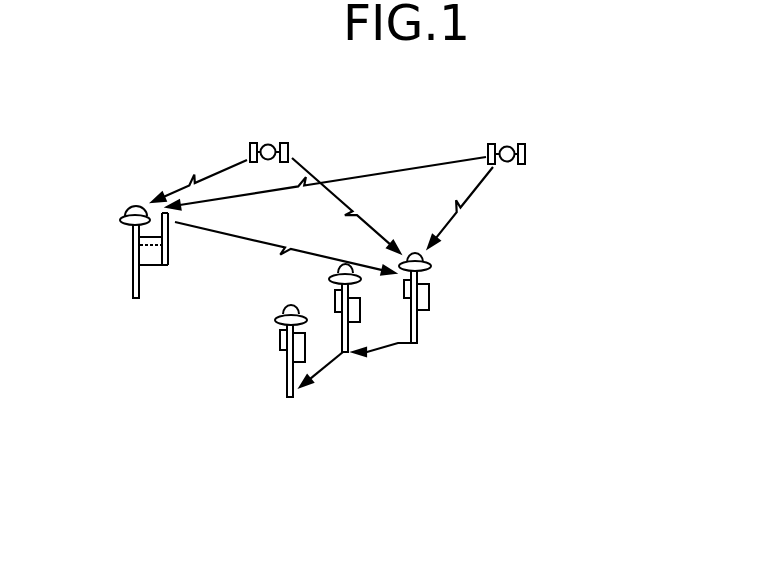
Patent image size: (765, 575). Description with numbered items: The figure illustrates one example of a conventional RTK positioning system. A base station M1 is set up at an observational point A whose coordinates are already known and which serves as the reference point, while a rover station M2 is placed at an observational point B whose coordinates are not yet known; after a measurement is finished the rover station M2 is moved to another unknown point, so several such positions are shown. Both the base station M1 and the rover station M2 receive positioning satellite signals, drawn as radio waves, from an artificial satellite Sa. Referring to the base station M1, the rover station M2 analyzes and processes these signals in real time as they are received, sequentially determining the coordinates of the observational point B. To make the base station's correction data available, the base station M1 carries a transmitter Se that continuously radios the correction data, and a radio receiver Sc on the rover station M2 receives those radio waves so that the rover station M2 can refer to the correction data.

The artificial satellite Sa is at (380, 137).
The base station M1 is at (134, 280).
The observational point A is at (135, 267).
The transmitter Se is at (155, 262).
The rover station M2 is at (443, 341).
The observational point B is at (384, 341).
The radio receiver Sc is at (431, 302).